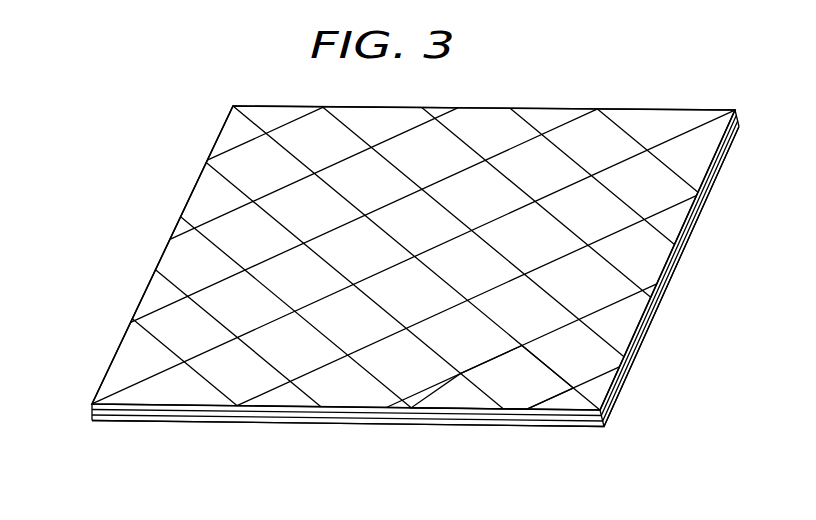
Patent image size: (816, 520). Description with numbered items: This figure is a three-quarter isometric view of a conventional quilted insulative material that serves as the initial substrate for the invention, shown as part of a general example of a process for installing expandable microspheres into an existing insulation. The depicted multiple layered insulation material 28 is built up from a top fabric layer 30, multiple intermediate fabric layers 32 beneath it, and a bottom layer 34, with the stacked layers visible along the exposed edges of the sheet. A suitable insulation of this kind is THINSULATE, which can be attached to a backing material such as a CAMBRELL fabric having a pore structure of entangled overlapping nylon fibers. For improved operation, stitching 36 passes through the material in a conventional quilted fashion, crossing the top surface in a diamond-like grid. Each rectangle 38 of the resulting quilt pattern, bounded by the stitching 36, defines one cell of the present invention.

The multiple layered insulation material 28 is at (562, 92).
The top fabric layer 30 is at (118, 353).
The intermediate fabric layers 32 is at (87, 426).
The bottom layer 34 is at (105, 424).
The stitching 36 is at (566, 306).
The rectangle 38 is at (518, 382).